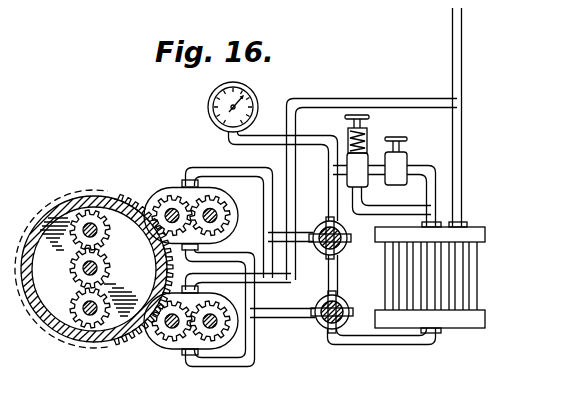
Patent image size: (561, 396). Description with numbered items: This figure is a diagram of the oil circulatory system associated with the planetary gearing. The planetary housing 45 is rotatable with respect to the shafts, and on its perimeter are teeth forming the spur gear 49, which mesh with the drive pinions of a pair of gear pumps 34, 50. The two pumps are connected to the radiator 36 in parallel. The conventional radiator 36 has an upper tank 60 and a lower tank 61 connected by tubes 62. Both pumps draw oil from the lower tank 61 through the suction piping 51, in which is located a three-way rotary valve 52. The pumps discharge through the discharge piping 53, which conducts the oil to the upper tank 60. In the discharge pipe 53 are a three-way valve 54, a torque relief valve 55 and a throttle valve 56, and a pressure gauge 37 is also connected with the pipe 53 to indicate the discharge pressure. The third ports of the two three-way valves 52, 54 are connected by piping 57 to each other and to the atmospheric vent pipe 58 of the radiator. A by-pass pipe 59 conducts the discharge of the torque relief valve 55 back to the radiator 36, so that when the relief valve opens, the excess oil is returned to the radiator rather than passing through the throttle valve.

The gear pump 34 is at (165, 190).
The radiator 36 is at (438, 281).
The pressure gauge 37 is at (208, 104).
The planetary housing 45 is at (58, 330).
The spur gear 49 is at (128, 194).
The gear pump 50 is at (177, 340).
The suction piping 51 is at (256, 327).
The three-way rotary valve 52 is at (349, 331).
The discharge piping 53 is at (217, 166).
The three-way valve 54 is at (342, 252).
The torque relief valve 55 is at (360, 113).
The throttle valve 56 is at (398, 134).
The piping 57 is at (338, 99).
The atmospheric vent pipe 58 is at (452, 50).
The by-pass pipe 59 is at (378, 207).
The upper tank 60 is at (475, 227).
The lower tank 61 is at (483, 329).
The tubes 62 is at (474, 279).